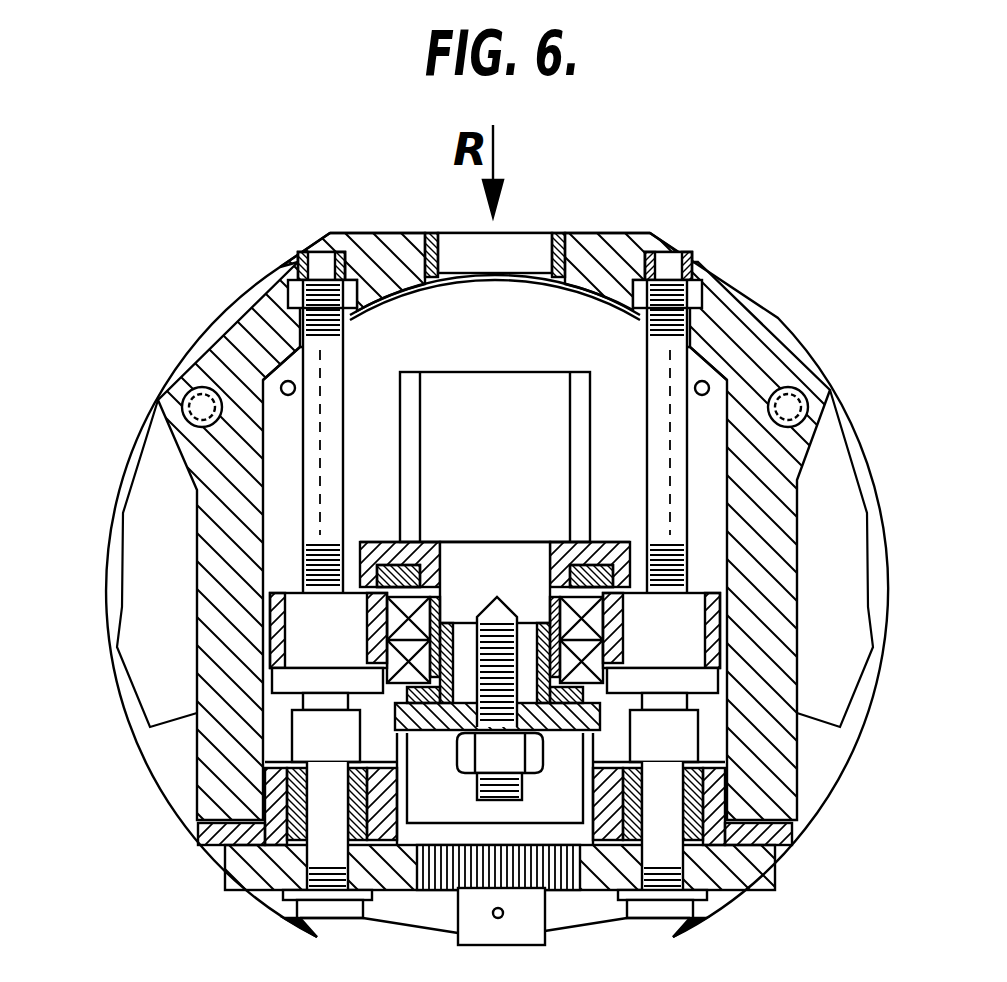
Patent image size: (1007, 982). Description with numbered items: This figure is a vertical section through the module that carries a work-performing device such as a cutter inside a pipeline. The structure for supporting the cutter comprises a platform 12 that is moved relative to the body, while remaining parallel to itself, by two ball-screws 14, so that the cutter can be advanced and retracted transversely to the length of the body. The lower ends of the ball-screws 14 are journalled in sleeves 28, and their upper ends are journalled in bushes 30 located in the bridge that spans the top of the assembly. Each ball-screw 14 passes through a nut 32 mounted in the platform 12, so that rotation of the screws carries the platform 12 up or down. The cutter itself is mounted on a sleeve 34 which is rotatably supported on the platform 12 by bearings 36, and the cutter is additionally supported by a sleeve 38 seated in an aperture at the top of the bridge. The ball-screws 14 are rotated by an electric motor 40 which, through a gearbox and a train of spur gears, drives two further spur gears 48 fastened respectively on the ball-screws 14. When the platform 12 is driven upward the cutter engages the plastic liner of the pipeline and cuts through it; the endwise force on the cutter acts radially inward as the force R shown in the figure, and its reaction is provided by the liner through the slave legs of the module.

The platform 12 is at (278, 585).
The ball-screws 14 is at (345, 318).
The sleeves 28 is at (265, 843).
The bushes 30 is at (300, 262).
The nut 32 is at (352, 648).
The sleeve 34 is at (408, 555).
The bearings 36 is at (455, 600).
The sleeve 38 is at (560, 237).
The electric motor 40 is at (478, 385).
The spur gears 48 is at (280, 870).